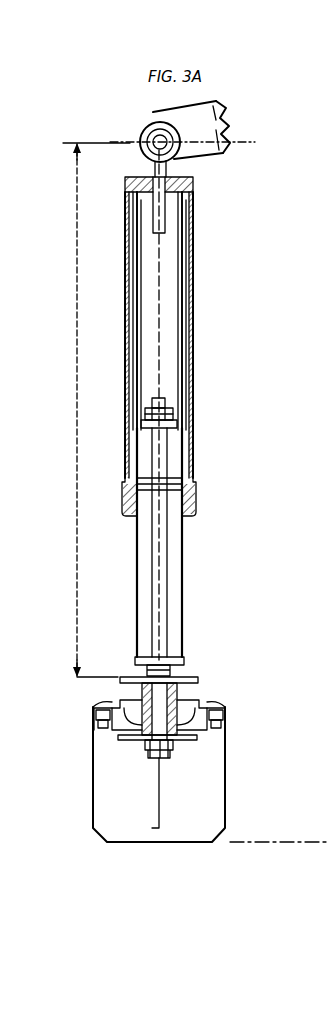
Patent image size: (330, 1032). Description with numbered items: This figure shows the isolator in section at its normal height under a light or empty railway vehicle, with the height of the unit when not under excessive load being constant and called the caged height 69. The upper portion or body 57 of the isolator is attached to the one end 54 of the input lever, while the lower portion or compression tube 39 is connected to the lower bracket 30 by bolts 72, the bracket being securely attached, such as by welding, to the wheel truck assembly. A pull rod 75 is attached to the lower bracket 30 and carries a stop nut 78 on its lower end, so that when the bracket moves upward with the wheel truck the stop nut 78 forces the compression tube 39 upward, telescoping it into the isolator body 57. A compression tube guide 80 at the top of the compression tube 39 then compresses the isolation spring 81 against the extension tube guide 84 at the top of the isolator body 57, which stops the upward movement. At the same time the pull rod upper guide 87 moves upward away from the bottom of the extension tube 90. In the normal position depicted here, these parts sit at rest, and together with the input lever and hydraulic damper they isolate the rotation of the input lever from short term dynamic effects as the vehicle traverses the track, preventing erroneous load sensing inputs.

The one end of the input lever 54 is at (153, 112).
The extension tube guide 84 is at (193, 193).
The isolator body 57 is at (194, 249).
The isolation spring 81 is at (193, 318).
The extension tube 90 is at (186, 370).
The pull rod upper guide 87 is at (180, 413).
The compression tube guide 80 is at (193, 478).
The pull rod 75 is at (169, 522).
The compression tube 39 is at (183, 601).
The stop nut 78 is at (196, 675).
The bolts 72 is at (92, 706).
The lower bracket 30 is at (92, 818).
The caged height 69 is at (76, 340).